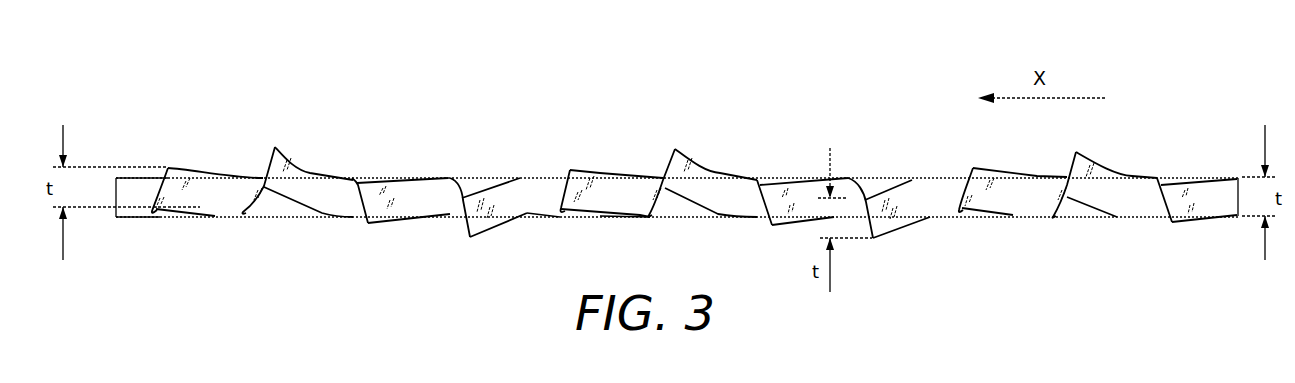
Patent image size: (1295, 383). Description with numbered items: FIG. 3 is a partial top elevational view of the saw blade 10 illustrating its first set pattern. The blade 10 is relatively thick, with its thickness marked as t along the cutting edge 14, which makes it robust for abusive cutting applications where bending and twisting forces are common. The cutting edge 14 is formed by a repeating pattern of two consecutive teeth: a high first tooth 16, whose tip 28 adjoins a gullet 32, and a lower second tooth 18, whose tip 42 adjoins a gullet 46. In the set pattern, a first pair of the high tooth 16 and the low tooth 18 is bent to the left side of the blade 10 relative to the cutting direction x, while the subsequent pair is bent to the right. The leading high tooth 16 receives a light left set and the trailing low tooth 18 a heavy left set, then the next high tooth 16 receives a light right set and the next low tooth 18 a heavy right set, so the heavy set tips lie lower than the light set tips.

The saw blade 10 is at (205, 103).
The cutting edge 14 is at (736, 114).
The first tooth 16 is at (164, 214).
The second tooth 18 is at (272, 209).
The tip 28 is at (566, 182).
The gullet 32 is at (530, 208).
The tip 42 is at (666, 175).
The gullet 46 is at (627, 208).